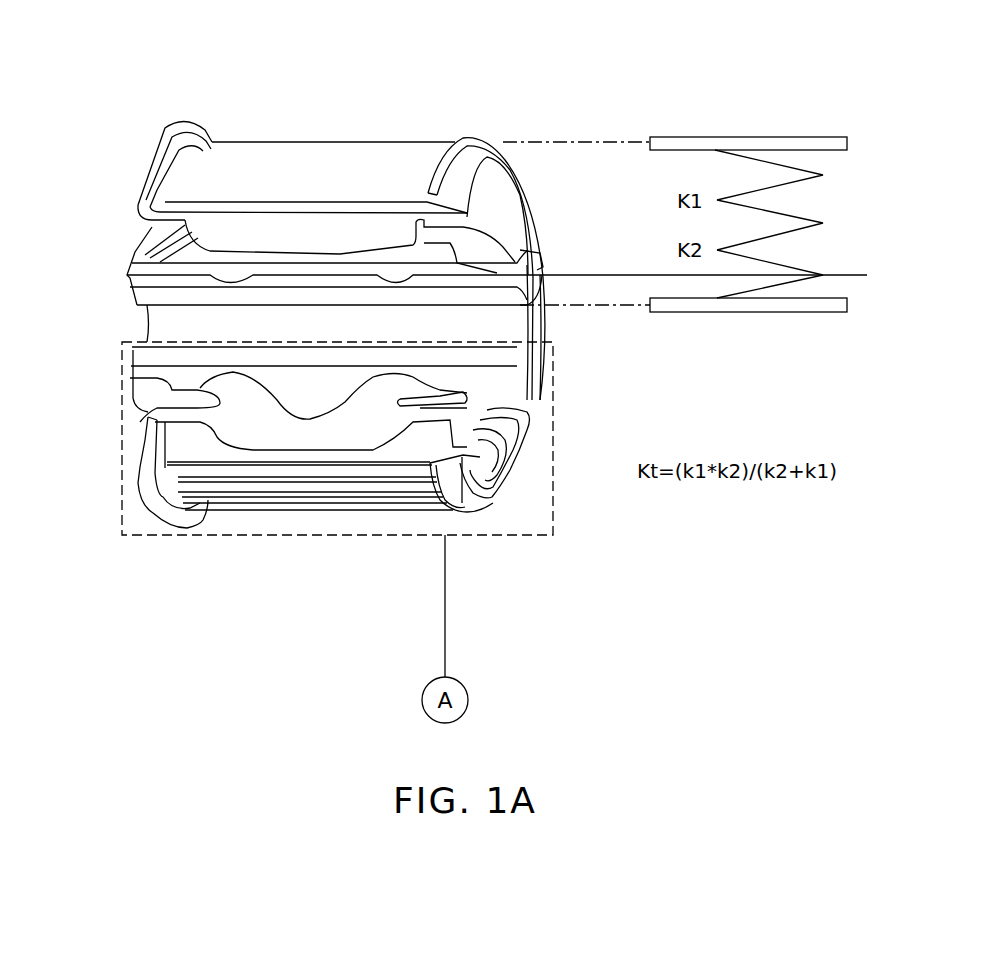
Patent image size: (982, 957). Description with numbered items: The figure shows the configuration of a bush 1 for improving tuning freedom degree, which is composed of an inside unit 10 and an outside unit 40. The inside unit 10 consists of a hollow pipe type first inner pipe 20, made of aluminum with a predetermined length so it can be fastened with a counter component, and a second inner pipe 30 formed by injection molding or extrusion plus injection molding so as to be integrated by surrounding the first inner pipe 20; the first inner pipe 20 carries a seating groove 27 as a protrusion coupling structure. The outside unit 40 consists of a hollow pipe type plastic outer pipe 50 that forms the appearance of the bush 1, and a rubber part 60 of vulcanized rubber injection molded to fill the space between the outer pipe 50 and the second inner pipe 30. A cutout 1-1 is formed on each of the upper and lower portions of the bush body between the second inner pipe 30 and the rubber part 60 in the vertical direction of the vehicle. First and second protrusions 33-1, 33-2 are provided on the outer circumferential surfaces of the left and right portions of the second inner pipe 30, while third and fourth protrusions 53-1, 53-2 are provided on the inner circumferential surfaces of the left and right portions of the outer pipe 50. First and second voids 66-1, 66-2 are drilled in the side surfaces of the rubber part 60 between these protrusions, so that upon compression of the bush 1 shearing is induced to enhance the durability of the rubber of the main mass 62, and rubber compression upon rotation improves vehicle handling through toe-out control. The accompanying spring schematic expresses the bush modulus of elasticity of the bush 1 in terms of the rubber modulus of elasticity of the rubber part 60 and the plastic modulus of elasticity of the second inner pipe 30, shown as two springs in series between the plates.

The bush 1 is at (452, 114).
The cutout 1-1 is at (177, 232).
The inside unit 10 is at (337, 578).
The first inner pipe 20 is at (822, 313).
The seating groove 27 is at (480, 185).
The second inner pipe 30 is at (813, 270).
The first protrusion 33-1 is at (177, 377).
The second protrusion 33-2 is at (460, 377).
The outside unit 40 is at (305, 57).
The outer pipe 50 is at (165, 130).
The third protrusion 53-1 is at (190, 447).
The fourth protrusion 53-2 is at (460, 513).
The rubber part 60 is at (308, 230).
The main mass 62 is at (370, 420).
The first void 66-1 is at (158, 400).
The second void 66-2 is at (530, 420).